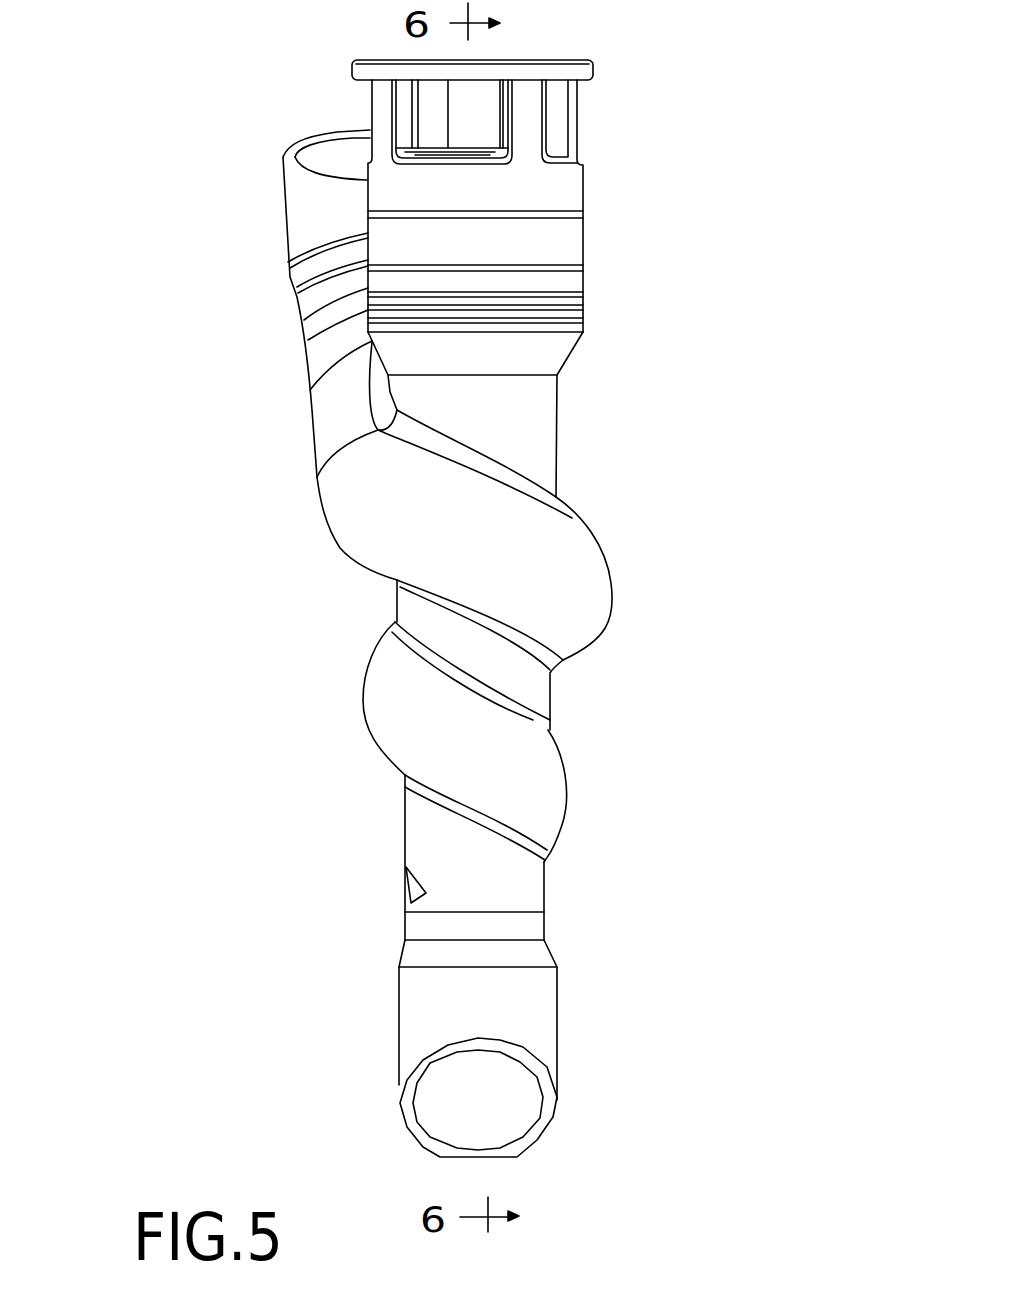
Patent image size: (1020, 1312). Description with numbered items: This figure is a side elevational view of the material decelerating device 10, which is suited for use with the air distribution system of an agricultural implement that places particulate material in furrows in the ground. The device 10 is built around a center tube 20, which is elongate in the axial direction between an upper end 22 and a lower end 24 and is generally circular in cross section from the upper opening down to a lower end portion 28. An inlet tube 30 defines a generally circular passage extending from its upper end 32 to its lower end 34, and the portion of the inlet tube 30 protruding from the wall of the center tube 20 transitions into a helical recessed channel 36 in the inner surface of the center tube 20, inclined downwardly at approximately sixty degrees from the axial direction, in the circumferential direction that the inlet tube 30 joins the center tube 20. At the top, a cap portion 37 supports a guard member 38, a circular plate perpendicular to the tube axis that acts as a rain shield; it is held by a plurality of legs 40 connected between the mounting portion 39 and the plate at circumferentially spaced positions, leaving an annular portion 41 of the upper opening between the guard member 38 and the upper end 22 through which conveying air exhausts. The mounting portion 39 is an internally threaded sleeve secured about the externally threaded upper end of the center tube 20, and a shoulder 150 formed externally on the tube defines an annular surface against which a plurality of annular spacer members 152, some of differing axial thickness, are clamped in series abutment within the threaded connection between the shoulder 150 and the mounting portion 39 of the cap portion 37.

The material decelerating device 10 is at (96, 450).
The center tube 20 is at (517, 678).
The upper end 22 is at (476, 147).
The lower end 24 is at (544, 930).
The lower end portion 28 is at (538, 1032).
The inlet tube 30 is at (325, 315).
The upper end 32 is at (308, 222).
The lower end 34 is at (317, 390).
The helical recessed channel 36 is at (390, 675).
The cap portion 37 is at (622, 172).
The guard member 38 is at (597, 72).
The mounting portion 39 is at (583, 198).
The legs 40 is at (385, 108).
The annular portion 41 is at (470, 115).
The shoulder 150 is at (580, 320).
The annular spacer members 152 is at (593, 220).